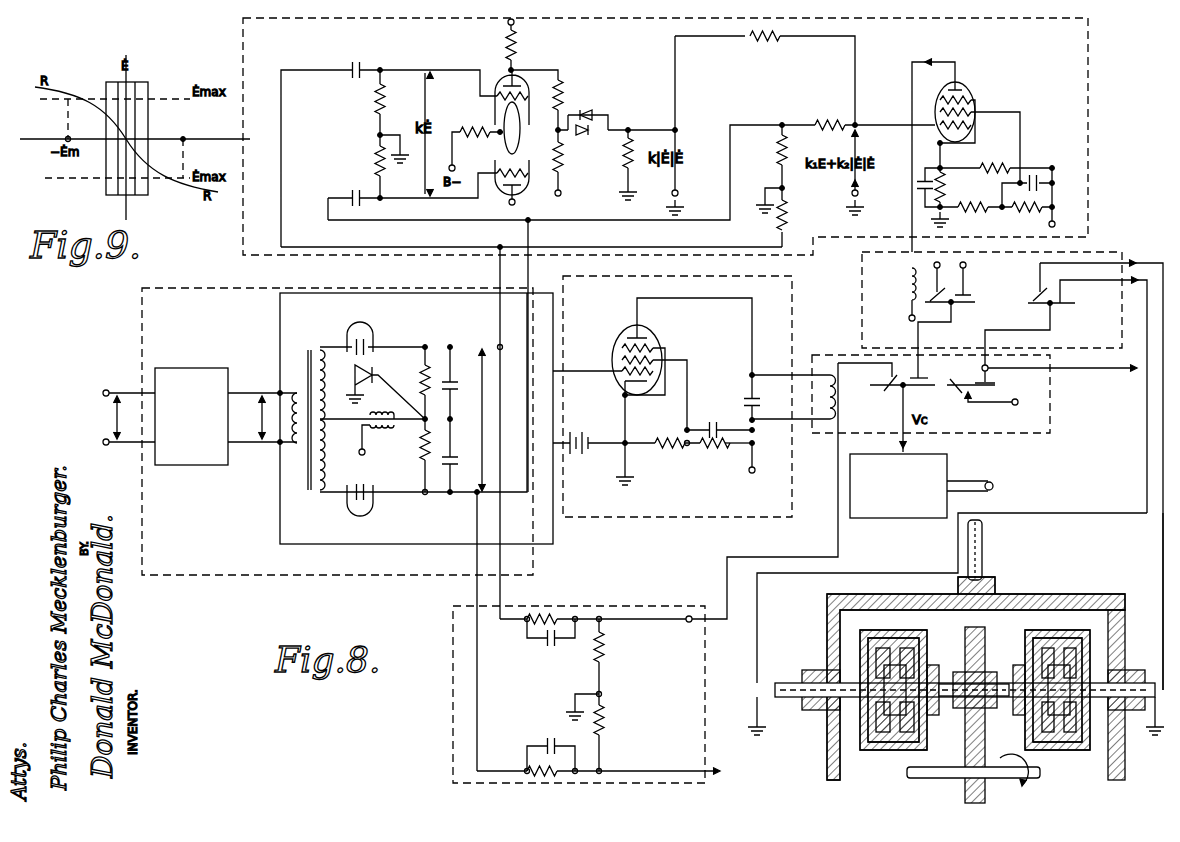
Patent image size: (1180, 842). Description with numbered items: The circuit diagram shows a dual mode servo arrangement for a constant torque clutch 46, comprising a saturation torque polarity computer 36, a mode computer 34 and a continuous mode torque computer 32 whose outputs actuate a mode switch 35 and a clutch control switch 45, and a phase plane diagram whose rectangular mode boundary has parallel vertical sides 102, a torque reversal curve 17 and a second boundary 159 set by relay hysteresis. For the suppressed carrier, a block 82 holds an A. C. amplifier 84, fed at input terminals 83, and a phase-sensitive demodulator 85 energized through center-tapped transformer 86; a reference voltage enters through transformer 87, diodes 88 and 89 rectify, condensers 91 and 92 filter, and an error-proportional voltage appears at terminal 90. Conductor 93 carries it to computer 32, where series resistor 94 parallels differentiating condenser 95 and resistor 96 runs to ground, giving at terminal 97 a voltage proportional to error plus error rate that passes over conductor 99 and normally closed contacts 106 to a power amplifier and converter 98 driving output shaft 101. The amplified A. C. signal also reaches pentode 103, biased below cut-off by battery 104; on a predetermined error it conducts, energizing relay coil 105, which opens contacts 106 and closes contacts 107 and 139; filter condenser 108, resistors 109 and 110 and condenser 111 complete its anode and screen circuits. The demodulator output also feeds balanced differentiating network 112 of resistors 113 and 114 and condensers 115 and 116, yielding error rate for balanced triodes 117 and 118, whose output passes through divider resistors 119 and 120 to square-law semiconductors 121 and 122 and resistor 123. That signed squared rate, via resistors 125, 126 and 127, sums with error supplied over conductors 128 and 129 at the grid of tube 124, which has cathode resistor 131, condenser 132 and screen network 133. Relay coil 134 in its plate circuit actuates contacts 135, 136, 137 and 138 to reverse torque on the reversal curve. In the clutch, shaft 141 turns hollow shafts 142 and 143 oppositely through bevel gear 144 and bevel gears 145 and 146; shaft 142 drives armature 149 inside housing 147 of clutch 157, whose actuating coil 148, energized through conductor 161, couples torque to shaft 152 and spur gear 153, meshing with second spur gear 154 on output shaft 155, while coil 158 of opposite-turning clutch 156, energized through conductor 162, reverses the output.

In FIG. 9, the torque reversal curve 17 is at (152, 168).
In FIG. 9, the parallel vertical sides 102 is at (146, 82).
In FIG. 9, the second boundary 159 is at (138, 195).
In FIG. 8, the continuous mode torque computer 32 is at (579, 694).
In FIG. 8, the mode computer 34 is at (677, 396).
In FIG. 8, the mode switch 35 is at (931, 394).
In FIG. 8, the saturation torque polarity computer 36 is at (665, 136).
In FIG. 8, the clutch control switch 45 is at (992, 300).
In FIG. 8, the constant torque clutch 46 is at (956, 661).
In FIG. 8, the block 82 is at (337, 431).
In FIG. 8, the input terminals 83 is at (112, 417).
In FIG. 8, the A. C. amplifier 84 is at (212, 466).
In FIG. 8, the demodulator 85 is at (416, 418).
In FIG. 8, the center-tapped transformer 86 is at (309, 348).
In FIG. 8, the transformer 87 is at (379, 442).
In FIG. 8, the diode 88 is at (352, 330).
In FIG. 8, the diode 89 is at (352, 503).
In FIG. 8, the terminal 90 is at (489, 420).
In FIG. 8, the condenser 91 is at (452, 388).
In FIG. 8, the condenser 92 is at (452, 463).
In FIG. 8, the conductor 93 is at (475, 589).
In FIG. 8, the series resistor 94 is at (560, 613).
In FIG. 8, the differentiating condenser 95 is at (552, 646).
In FIG. 8, the resistor 96 is at (606, 655).
In FIG. 8, the terminal 97 is at (688, 623).
In FIG. 8, the power amplifier and converter 98 is at (905, 514).
In FIG. 8, the conductor 99 is at (780, 557).
In FIG. 8, the output shaft 101 is at (993, 484).
In FIG. 8, the pentode 103 is at (614, 345).
In FIG. 8, the battery 104 is at (588, 430).
In FIG. 8, the relay coil 105 is at (825, 432).
In FIG. 8, the normally closed contacts 106 is at (886, 385).
In FIG. 8, the contacts 107 is at (922, 392).
In FIG. 8, the filter condenser 108 is at (740, 400).
In FIG. 8, the resistor 109 is at (668, 450).
In FIG. 8, the resistor 110 is at (716, 450).
In FIG. 8, the condenser 111 is at (720, 427).
In FIG. 8, the balanced differentiating network 112 is at (531, 158).
In FIG. 8, the resistor 113 is at (384, 102).
In FIG. 8, the resistor 114 is at (384, 178).
In FIG. 8, the condenser 115 is at (350, 80).
In FIG. 8, the condenser 116 is at (350, 194).
In FIG. 8, the triode 117 is at (523, 116).
In FIG. 8, the triode 118 is at (526, 170).
In FIG. 8, the resistor 119 is at (562, 97).
In FIG. 8, the resistor 120 is at (576, 170).
In FIG. 8, the semiconductor 121 is at (588, 115).
In FIG. 8, the semiconductor 122 is at (583, 134).
In FIG. 8, the resistor 123 is at (638, 150).
In FIG. 8, the vacuum tube 124 is at (970, 100).
In FIG. 8, the resistor 125 is at (762, 41).
In FIG. 8, the resistor 126 is at (818, 123).
In FIG. 8, the resistor 127 is at (779, 146).
In FIG. 8, the conductor 128 is at (527, 324).
In FIG. 8, the conductor 129 is at (555, 185).
In FIG. 8, the resistor 131 is at (946, 190).
In FIG. 8, the condenser 132 is at (912, 184).
In FIG. 8, the network 133 is at (1009, 197).
In FIG. 8, the relay coil 134 is at (908, 293).
In FIG. 8, the contacts 135 is at (950, 285).
In FIG. 8, the contacts 136 is at (952, 314).
In FIG. 8, the contacts 137 is at (1045, 295).
In FIG. 8, the contacts 138 is at (1074, 464).
In FIG. 8, the contacts 139 is at (997, 384).
In FIG. 8, the shaft 141 is at (985, 548).
In FIG. 8, the hollow shaft 142 is at (795, 700).
In FIG. 8, the hollow shaft 143 is at (1122, 722).
In FIG. 8, the bevel gear 144 is at (1062, 600).
In FIG. 8, the bevel gear 145 is at (1120, 642).
In FIG. 8, the bevel gear 146 is at (827, 636).
In FIG. 8, the housing 147 is at (930, 664).
In FIG. 8, the actuating coil 148 is at (880, 753).
In FIG. 8, the magnetic armature 149 is at (904, 648).
In FIG. 8, the shaft 152 is at (950, 682).
In FIG. 8, the spur gear 153 is at (990, 655).
In FIG. 8, the second spur gear 154 is at (965, 786).
In FIG. 8, the output shaft 155 is at (938, 767).
In FIG. 8, the magnetic clutch 156 is at (1073, 755).
In FIG. 8, the magnetic fluid clutch 157 is at (897, 762).
In FIG. 8, the coil 158 is at (1058, 648).
In FIG. 8, the conductor 161 is at (1064, 512).
In FIG. 8, the conductor 162 is at (1160, 551).